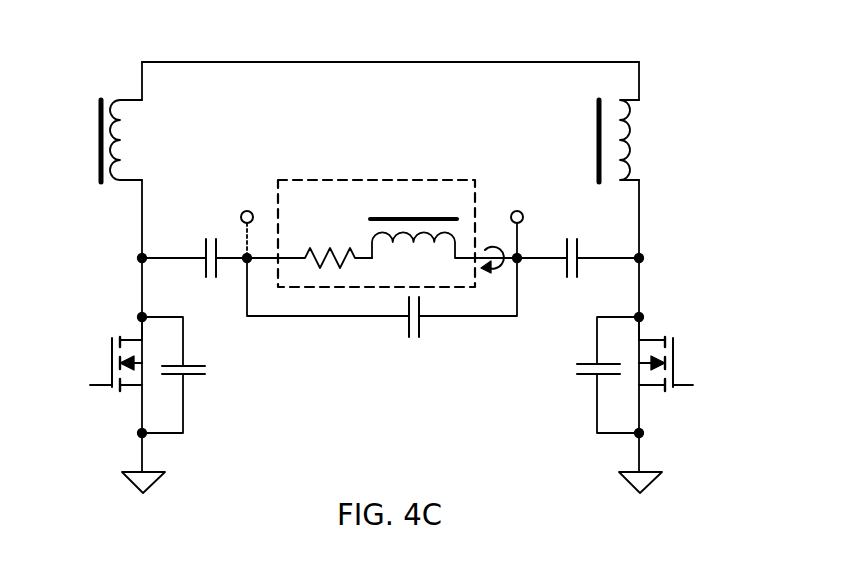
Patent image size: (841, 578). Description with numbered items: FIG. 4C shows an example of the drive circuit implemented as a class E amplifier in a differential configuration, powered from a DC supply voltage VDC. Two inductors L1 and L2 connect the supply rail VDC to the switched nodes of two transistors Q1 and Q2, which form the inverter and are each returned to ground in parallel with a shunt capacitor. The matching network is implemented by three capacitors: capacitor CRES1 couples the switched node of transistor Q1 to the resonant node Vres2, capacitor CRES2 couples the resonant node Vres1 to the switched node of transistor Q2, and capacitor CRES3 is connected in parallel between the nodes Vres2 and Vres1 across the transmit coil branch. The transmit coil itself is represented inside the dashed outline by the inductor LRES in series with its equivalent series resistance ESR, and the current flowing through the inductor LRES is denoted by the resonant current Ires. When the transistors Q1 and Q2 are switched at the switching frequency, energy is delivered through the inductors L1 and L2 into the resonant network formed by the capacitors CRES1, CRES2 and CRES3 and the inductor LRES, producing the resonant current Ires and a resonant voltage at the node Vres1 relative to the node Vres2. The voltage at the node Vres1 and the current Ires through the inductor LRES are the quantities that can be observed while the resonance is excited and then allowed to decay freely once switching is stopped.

The DC supply voltage VDC is at (390, 49).
The inductor L1 is at (129, 141).
The inductor L2 is at (630, 141).
The transistor Q1 is at (147, 404).
The transistor Q2 is at (635, 404).
The capacitor CRES1 is at (194, 249).
The capacitor CRES2 is at (578, 249).
The capacitor CRES3 is at (382, 311).
The equivalent series resistance ESR is at (309, 251).
The inductor LRES is at (443, 229).
The node Vres2 is at (233, 222).
The node Vres1 is at (544, 222).
The resonant current Ires is at (493, 270).